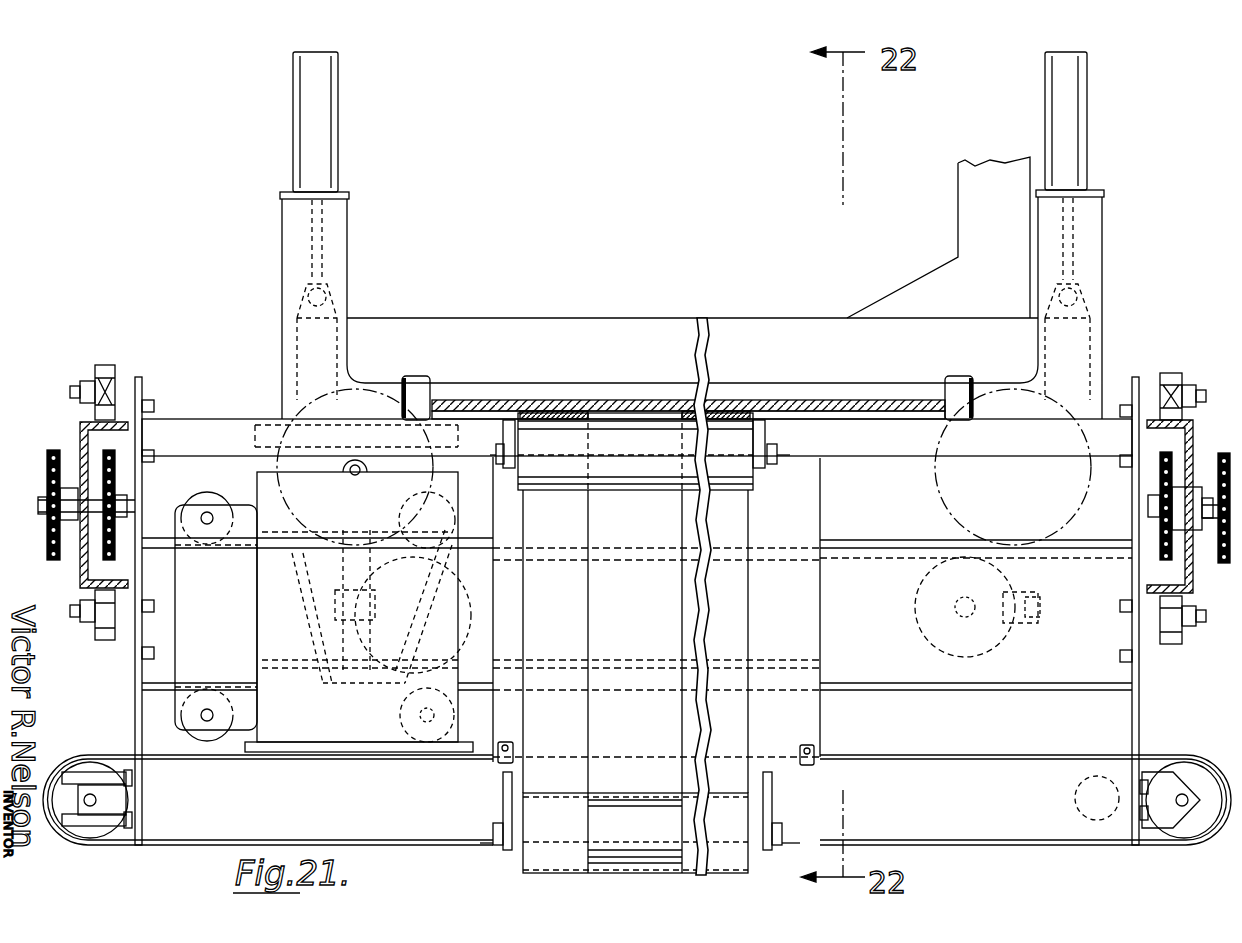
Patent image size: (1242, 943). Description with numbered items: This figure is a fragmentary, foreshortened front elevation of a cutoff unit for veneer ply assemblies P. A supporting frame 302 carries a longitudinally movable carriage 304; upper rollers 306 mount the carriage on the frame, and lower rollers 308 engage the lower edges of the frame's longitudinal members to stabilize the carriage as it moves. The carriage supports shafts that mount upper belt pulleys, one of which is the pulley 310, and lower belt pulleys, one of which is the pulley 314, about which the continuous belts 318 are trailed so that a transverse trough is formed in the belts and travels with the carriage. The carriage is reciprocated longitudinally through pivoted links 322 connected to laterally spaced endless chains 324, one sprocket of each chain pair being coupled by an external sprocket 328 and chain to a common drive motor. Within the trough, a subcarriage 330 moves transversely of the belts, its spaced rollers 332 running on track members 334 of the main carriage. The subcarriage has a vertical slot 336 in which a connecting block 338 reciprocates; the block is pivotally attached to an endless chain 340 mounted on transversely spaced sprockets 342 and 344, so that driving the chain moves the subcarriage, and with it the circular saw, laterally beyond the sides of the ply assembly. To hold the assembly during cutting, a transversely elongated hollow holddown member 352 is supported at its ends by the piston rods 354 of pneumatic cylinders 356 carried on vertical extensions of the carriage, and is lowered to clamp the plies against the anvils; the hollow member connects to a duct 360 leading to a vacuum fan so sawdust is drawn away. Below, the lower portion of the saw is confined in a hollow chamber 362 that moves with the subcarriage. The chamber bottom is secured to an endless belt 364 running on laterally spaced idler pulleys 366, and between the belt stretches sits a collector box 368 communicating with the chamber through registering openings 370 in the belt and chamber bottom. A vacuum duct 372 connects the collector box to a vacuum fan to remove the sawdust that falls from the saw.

The supporting frame 302 is at (84, 422).
The carriage 304 is at (1139, 716).
The upper rollers 306 is at (104, 365).
The lower rollers 308 is at (107, 645).
The upper belt pulley 310 is at (638, 491).
The lower belt pulley 314 is at (640, 871).
The continuous belts 318 is at (686, 783).
The links 322 is at (124, 504).
The endless chains 324 is at (112, 456).
The external sprocket 328 is at (56, 450).
The subcarriage 330 is at (246, 587).
The spaced rollers 332 is at (220, 507).
The track members 334 is at (168, 690).
The vertical slot 336 is at (372, 606).
The connecting block 338 is at (336, 613).
The endless chain 340 is at (613, 655).
The sprocket 342 is at (394, 660).
The sprocket 344 is at (918, 633).
The holddown member 352 is at (745, 318).
The piston rods 354 is at (1072, 230).
The cylinders 356 is at (332, 113).
The duct 360 is at (960, 218).
The hollow chamber 362 is at (305, 673).
The endless belt 364 is at (128, 756).
The idler pulleys 366 is at (118, 843).
The collector box 368 is at (442, 838).
The registering openings 370 is at (428, 752).
The vacuum duct 372 is at (1097, 821).
The veneer ply assemblies P is at (498, 398).